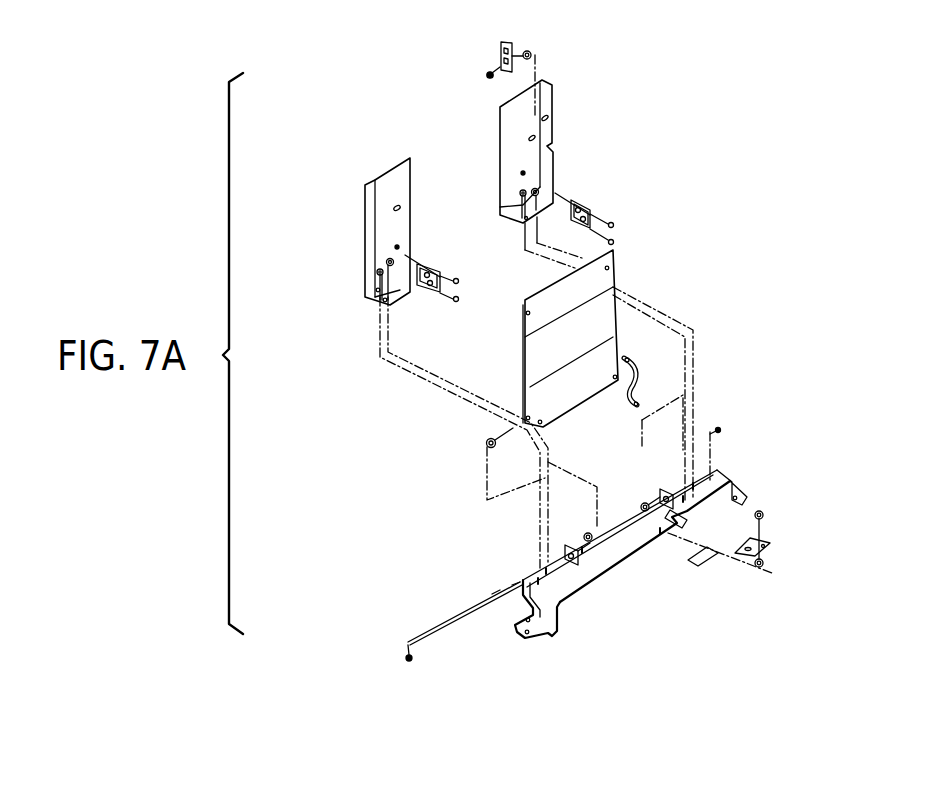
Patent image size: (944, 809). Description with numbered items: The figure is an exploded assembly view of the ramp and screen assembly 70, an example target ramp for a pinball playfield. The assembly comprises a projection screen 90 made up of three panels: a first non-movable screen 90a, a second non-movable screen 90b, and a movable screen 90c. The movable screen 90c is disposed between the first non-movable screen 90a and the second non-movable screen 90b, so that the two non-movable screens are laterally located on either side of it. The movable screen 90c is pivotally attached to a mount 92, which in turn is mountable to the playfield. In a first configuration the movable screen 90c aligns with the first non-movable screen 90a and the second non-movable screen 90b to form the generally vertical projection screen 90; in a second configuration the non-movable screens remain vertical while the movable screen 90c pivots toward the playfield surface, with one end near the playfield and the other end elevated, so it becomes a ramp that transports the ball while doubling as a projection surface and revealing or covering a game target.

The ramp and screen assembly 70 is at (709, 280).
The projection screen 90 is at (453, 479).
The first non-movable screen 90a is at (370, 233).
The second non-movable screen 90b is at (553, 130).
The movable screen 90c is at (610, 326).
The mount 92 is at (603, 563).